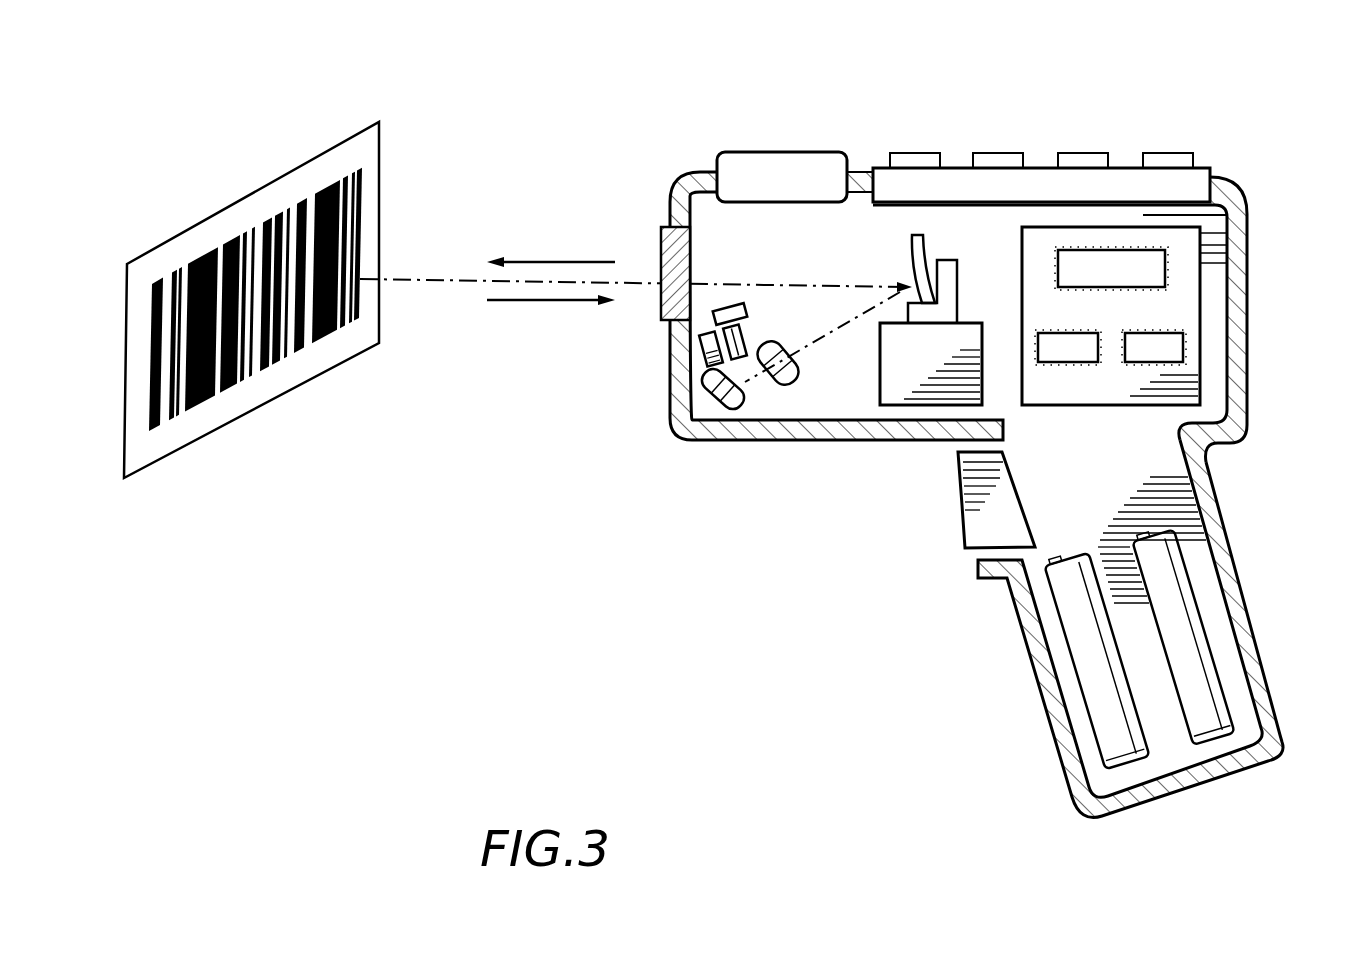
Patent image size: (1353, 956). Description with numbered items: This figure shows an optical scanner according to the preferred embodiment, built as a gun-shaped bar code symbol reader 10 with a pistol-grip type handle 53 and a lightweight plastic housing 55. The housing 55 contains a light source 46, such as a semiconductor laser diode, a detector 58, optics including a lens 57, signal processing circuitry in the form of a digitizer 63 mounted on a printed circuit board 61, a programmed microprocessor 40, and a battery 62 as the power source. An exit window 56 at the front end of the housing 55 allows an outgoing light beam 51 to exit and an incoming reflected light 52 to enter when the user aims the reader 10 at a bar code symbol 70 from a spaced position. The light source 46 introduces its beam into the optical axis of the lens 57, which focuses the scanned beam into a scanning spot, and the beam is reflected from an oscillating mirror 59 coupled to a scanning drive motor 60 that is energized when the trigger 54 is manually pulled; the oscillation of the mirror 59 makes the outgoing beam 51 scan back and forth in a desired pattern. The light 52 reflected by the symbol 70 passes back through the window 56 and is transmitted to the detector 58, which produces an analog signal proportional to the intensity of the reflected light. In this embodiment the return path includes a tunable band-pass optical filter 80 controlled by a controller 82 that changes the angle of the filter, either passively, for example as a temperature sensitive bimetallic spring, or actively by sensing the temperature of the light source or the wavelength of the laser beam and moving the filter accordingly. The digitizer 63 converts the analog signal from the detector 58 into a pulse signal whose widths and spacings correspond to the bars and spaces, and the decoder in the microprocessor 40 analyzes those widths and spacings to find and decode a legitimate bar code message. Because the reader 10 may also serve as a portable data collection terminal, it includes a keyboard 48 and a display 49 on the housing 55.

The bar code symbol reader 10 is at (692, 605).
The programmed microprocessor 40 is at (1083, 267).
The light source 46 is at (730, 403).
The keyboard 48 is at (1135, 177).
The display 49 is at (783, 158).
The outgoing light beam 51 is at (540, 262).
The incoming reflected light 52 is at (503, 301).
The handle 53 is at (1047, 678).
The trigger 54 is at (995, 520).
The housing 55 is at (1238, 391).
The exit window 56 is at (660, 232).
The lens 57 is at (793, 380).
The detector 58 is at (702, 352).
The oscillating mirror 59 is at (923, 243).
The scanning drive motor 60 is at (915, 393).
The printed circuit board 61 is at (1217, 263).
The battery 62 is at (1203, 717).
The digitizer 63 is at (1070, 347).
The bar code symbol 70 is at (358, 188).
The tunable band-pass optical filter 80 is at (745, 338).
The controller 82 is at (723, 305).